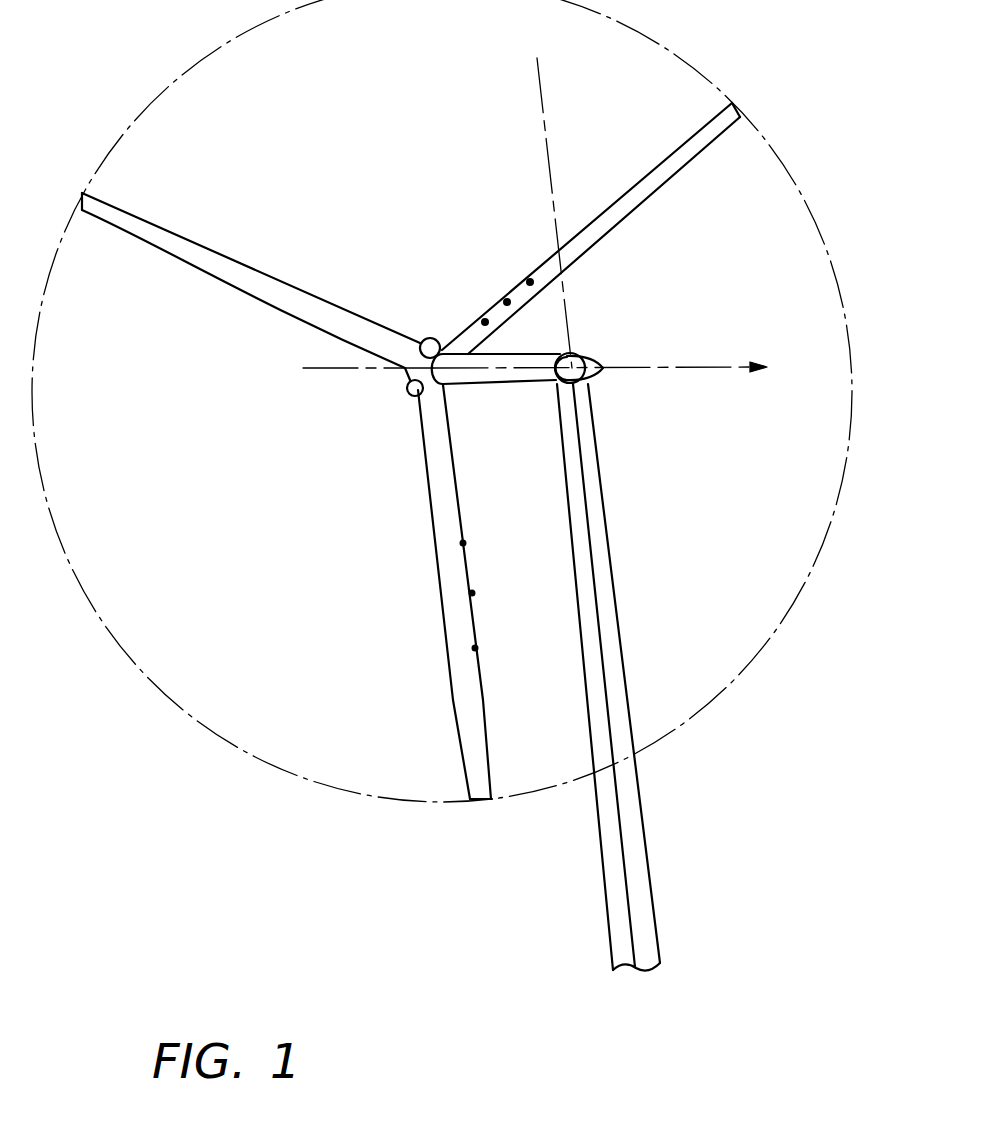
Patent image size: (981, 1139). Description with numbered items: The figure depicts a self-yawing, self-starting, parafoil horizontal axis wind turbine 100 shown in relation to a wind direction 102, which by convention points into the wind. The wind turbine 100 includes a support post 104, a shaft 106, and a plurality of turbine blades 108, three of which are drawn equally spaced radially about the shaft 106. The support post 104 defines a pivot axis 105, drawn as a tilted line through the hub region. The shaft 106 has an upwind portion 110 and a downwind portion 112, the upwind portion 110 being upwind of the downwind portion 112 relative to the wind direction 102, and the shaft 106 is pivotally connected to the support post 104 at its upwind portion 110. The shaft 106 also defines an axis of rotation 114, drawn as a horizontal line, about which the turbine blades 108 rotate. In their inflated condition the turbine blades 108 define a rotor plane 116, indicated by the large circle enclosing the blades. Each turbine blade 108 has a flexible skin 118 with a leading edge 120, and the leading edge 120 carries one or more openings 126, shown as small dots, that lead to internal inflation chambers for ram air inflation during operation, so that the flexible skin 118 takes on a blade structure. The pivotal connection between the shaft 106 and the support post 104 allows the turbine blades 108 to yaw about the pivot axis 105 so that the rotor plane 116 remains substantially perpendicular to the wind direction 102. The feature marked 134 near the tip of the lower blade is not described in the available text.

The horizontal axis wind turbine 100 is at (197, 807).
The wind direction 102 is at (728, 367).
The support post 104 is at (603, 505).
The pivot axis 105 is at (540, 85).
The shaft 106 is at (527, 355).
The turbine blades 108 is at (160, 222).
The upwind portion 110 is at (547, 383).
The downwind portion 112 is at (487, 387).
The axis of rotation 114 is at (330, 368).
The rotor plane 116 is at (148, 683).
The flexible skin 118 is at (137, 233).
The leading edge 120 is at (650, 178).
The openings 126 is at (485, 322).
The blade tip 134 is at (458, 748).